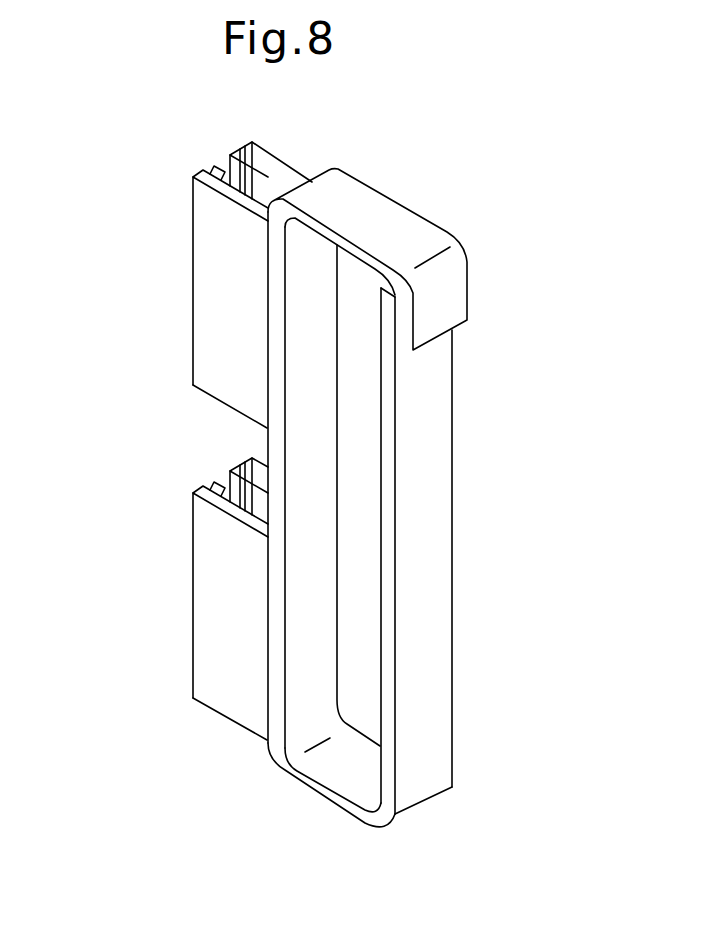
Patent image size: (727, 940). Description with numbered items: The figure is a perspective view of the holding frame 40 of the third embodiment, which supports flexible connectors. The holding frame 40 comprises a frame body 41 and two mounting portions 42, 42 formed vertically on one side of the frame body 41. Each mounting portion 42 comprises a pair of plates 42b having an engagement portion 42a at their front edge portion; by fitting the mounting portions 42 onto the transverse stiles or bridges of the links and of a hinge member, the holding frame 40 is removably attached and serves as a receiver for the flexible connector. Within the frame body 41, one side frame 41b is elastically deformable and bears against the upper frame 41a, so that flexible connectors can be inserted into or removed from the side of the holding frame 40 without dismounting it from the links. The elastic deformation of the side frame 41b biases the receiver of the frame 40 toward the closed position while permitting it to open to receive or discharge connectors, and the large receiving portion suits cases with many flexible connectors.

The holding frame 40 is at (397, 188).
The frame body 41 is at (469, 395).
The upper frame 41a is at (431, 238).
The side frame 41b is at (445, 463).
The mounting portion 42 is at (295, 164).
The engagement portion 42a is at (220, 158).
The plate 42b is at (215, 260).